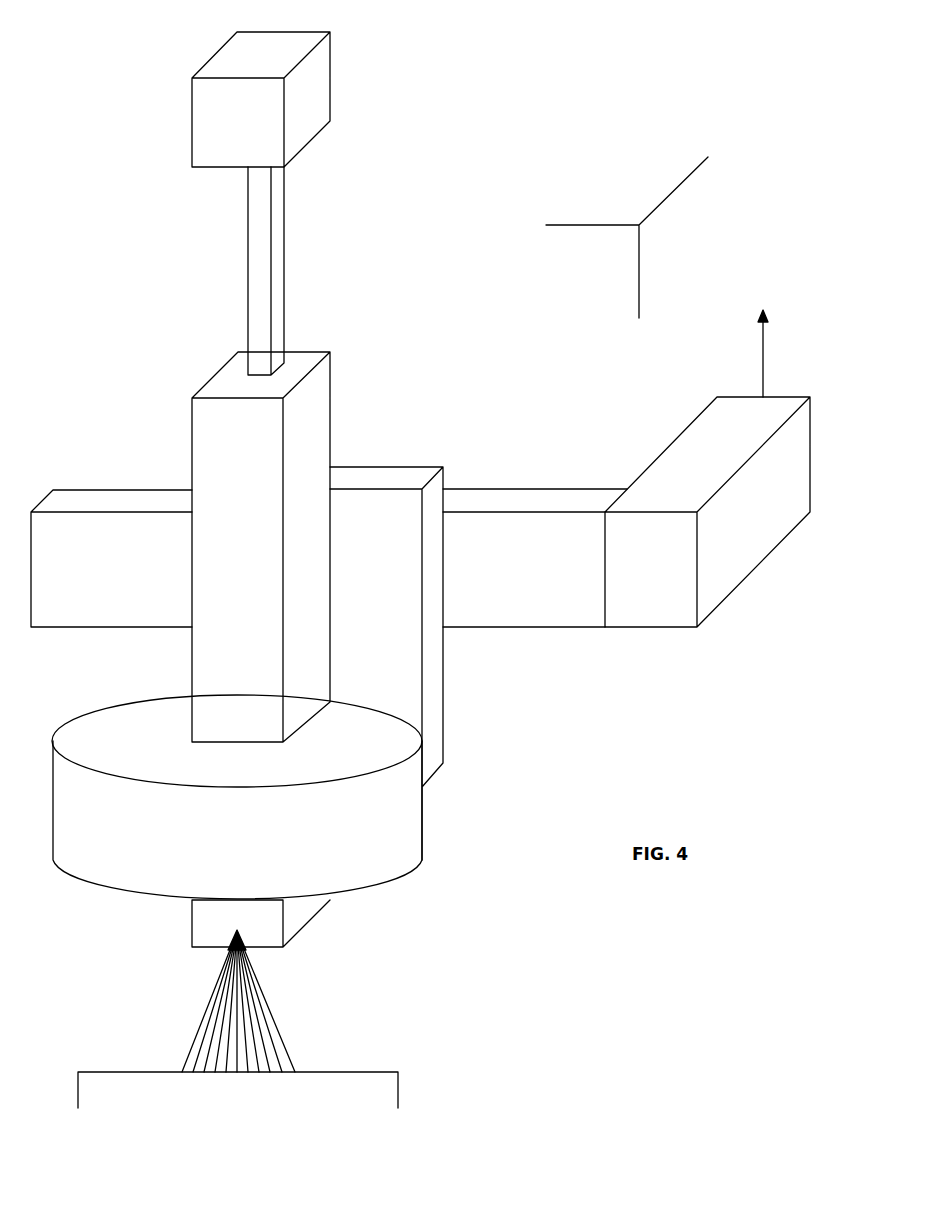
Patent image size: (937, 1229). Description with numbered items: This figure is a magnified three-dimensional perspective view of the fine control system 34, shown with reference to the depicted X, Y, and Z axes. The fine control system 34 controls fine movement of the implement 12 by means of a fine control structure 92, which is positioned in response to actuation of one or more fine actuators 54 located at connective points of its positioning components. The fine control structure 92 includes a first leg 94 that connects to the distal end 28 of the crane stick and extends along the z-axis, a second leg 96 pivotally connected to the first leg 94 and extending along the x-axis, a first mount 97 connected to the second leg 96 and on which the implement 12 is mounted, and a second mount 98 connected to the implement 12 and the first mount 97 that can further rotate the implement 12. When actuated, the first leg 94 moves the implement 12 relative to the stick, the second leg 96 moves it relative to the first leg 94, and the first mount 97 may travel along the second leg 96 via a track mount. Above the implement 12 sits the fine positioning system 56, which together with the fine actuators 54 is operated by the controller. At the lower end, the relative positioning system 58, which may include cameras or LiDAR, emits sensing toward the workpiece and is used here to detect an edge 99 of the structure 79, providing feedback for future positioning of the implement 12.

The fine control system 34 is at (582, 102).
The fine positioning system 56 is at (252, 55).
The implement 12 is at (305, 558).
The fine control structure 92 is at (445, 491).
The first mount 97 is at (378, 489).
The second leg 96 is at (558, 489).
The first leg 94 is at (760, 534).
The distal end 28 is at (792, 353).
The second mount 98 is at (397, 823).
The fine actuators 54 is at (810, 467).
The relative positioning system 58 is at (245, 945).
The edge 99 is at (375, 1072).
The structure 79 is at (100, 1098).